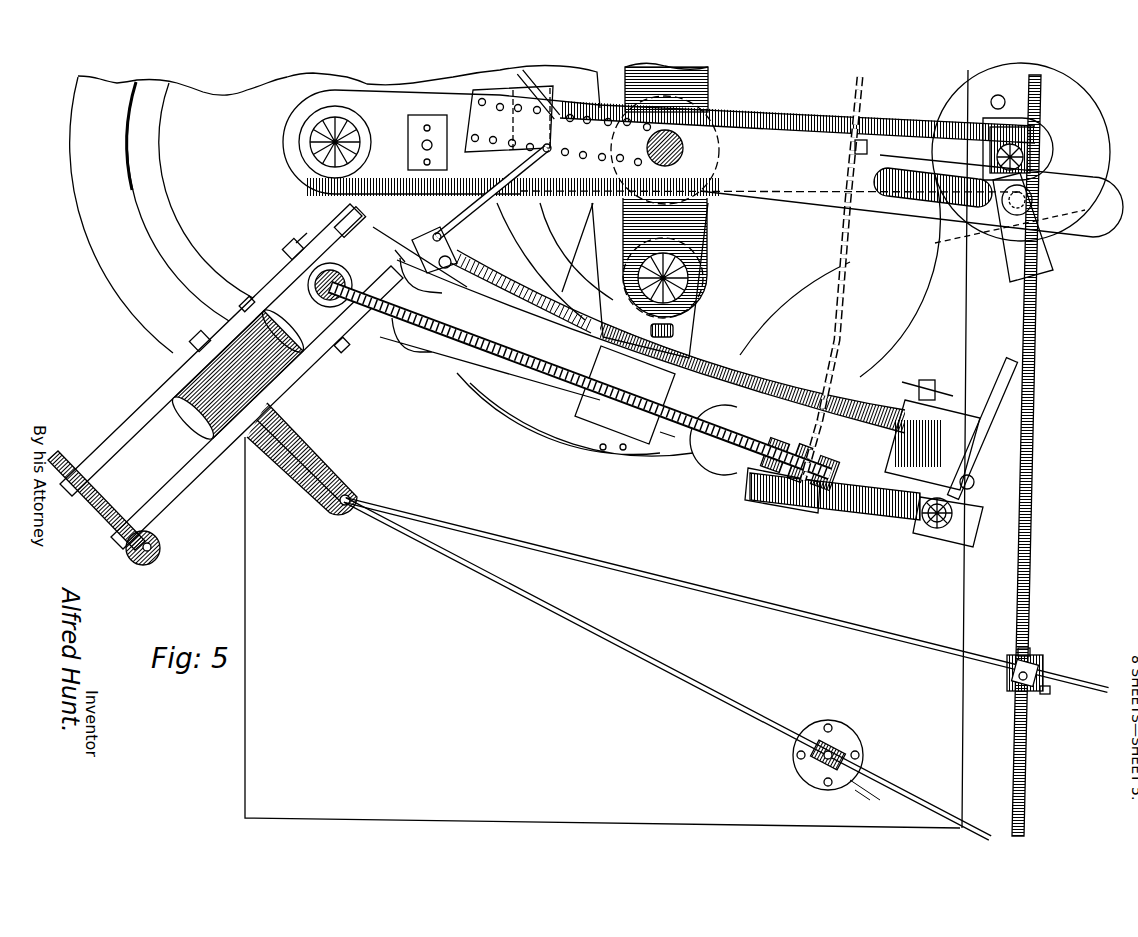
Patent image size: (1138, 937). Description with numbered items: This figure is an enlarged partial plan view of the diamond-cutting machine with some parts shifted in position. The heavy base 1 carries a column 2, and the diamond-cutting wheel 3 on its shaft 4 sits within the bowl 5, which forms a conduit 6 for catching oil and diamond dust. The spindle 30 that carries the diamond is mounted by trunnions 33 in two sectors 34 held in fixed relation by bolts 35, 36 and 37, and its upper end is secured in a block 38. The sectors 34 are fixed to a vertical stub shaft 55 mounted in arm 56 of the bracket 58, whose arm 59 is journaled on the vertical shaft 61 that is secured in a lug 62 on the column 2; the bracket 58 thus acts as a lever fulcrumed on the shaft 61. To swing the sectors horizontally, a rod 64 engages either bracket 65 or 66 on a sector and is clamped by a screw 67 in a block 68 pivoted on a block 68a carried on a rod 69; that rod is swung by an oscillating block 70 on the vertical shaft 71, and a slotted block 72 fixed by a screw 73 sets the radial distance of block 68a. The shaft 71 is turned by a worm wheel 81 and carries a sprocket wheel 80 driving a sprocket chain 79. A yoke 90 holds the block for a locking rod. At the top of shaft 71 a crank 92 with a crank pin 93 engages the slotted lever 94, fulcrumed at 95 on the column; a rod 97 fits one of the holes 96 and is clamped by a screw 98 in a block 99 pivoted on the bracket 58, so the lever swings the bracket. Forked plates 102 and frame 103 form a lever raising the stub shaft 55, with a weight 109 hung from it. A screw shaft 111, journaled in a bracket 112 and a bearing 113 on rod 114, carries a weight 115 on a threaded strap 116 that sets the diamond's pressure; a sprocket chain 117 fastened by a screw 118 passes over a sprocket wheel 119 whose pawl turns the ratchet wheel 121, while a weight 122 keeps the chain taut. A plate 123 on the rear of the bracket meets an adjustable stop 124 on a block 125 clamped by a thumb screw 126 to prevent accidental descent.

The base 1 is at (623, 452).
The column 2 is at (632, 108).
The diamond-cutting wheel 3 is at (187, 200).
The shaft 4 is at (318, 140).
The bowl 5 is at (71, 173).
The conduit 6 is at (143, 180).
The spindle 30 is at (200, 418).
The trunnions 33 is at (242, 300).
The sectors 34 is at (160, 392).
The bolt 35 is at (110, 497).
The bolt 36 is at (196, 338).
The bolt 37 is at (285, 250).
The block 38 is at (630, 652).
The vertical stub shaft 55 is at (338, 270).
The arm 56 is at (345, 227).
The bracket 58 is at (735, 362).
The arm 59 is at (705, 322).
The vertical shaft 61 is at (690, 278).
The lug 62 is at (703, 236).
The rod 64 is at (662, 582).
The bracket 65 is at (325, 472).
The bracket 66 is at (160, 547).
The screw 67 is at (1007, 674).
The block 68 is at (1017, 690).
The block 68a is at (1044, 670).
The rod 69 is at (1030, 503).
The block 70 is at (1053, 140).
The vertical shaft 71 is at (1024, 157).
The block 72 is at (1032, 656).
The screw 73 is at (1048, 694).
The sprocket chain 79 is at (956, 92).
The sprocket wheel 80 is at (998, 95).
The worm wheel 81 is at (948, 238).
The yoke 90 is at (862, 752).
The crank 92 is at (1012, 276).
The crank pin 93 is at (1008, 208).
The lever 94 is at (1100, 196).
The fulcrum 95 is at (683, 140).
The holes 96 is at (600, 155).
The rod 97 is at (500, 210).
The screw 98 is at (430, 238).
The block 99 is at (476, 225).
The forked plates 102 is at (448, 314).
The frame 103 is at (873, 502).
The weight 109 is at (722, 466).
The screw shaft 111 is at (668, 442).
The bracket 112 is at (830, 490).
The bearing 113 is at (410, 248).
The rod 114 is at (334, 342).
The weight 115 is at (592, 412).
The strap 116 is at (603, 452).
The sprocket chain 117 is at (866, 84).
The screw 118 is at (866, 146).
The sprocket wheel 119 is at (790, 482).
The ratchet wheel 121 is at (803, 494).
The weight 122 is at (766, 488).
The plate 123 is at (953, 530).
The stop 124 is at (998, 398).
The block 125 is at (965, 415).
The thumb screw 126 is at (927, 380).